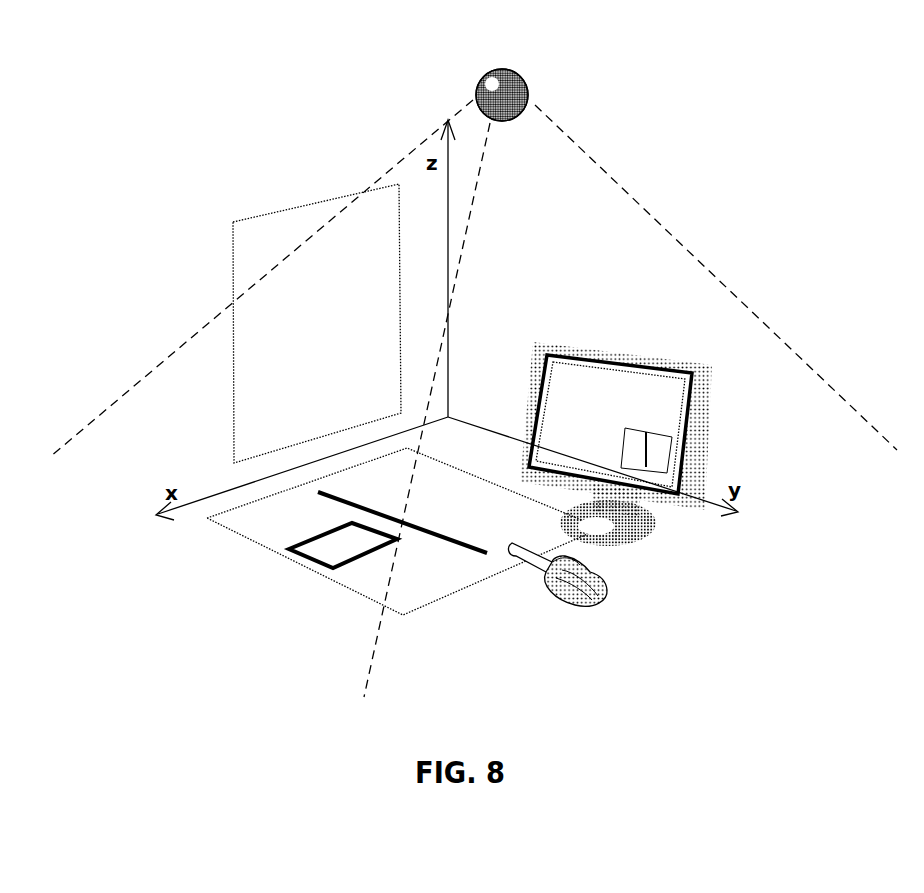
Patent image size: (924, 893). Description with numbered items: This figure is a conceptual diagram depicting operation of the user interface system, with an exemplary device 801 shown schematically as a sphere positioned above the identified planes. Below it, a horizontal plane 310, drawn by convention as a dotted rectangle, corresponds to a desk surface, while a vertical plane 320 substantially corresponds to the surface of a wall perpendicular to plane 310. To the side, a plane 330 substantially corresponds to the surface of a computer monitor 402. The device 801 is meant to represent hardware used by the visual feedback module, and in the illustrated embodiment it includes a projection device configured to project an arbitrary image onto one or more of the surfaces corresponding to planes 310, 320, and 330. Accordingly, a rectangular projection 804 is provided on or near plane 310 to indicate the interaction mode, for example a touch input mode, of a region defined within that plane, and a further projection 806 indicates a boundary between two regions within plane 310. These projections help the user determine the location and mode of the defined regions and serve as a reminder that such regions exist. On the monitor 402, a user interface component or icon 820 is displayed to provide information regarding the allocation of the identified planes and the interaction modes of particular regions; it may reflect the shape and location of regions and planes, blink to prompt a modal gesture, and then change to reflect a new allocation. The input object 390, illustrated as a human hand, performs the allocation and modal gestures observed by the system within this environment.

The device 801 is at (522, 90).
The plane 320 is at (233, 378).
The plane 310 is at (248, 538).
The projection 804 is at (300, 565).
The projection 806 is at (472, 553).
The plane 330 is at (616, 368).
The computer monitor 402 is at (548, 388).
The user interface component (icon) 820 is at (655, 458).
The input object 390 is at (590, 615).